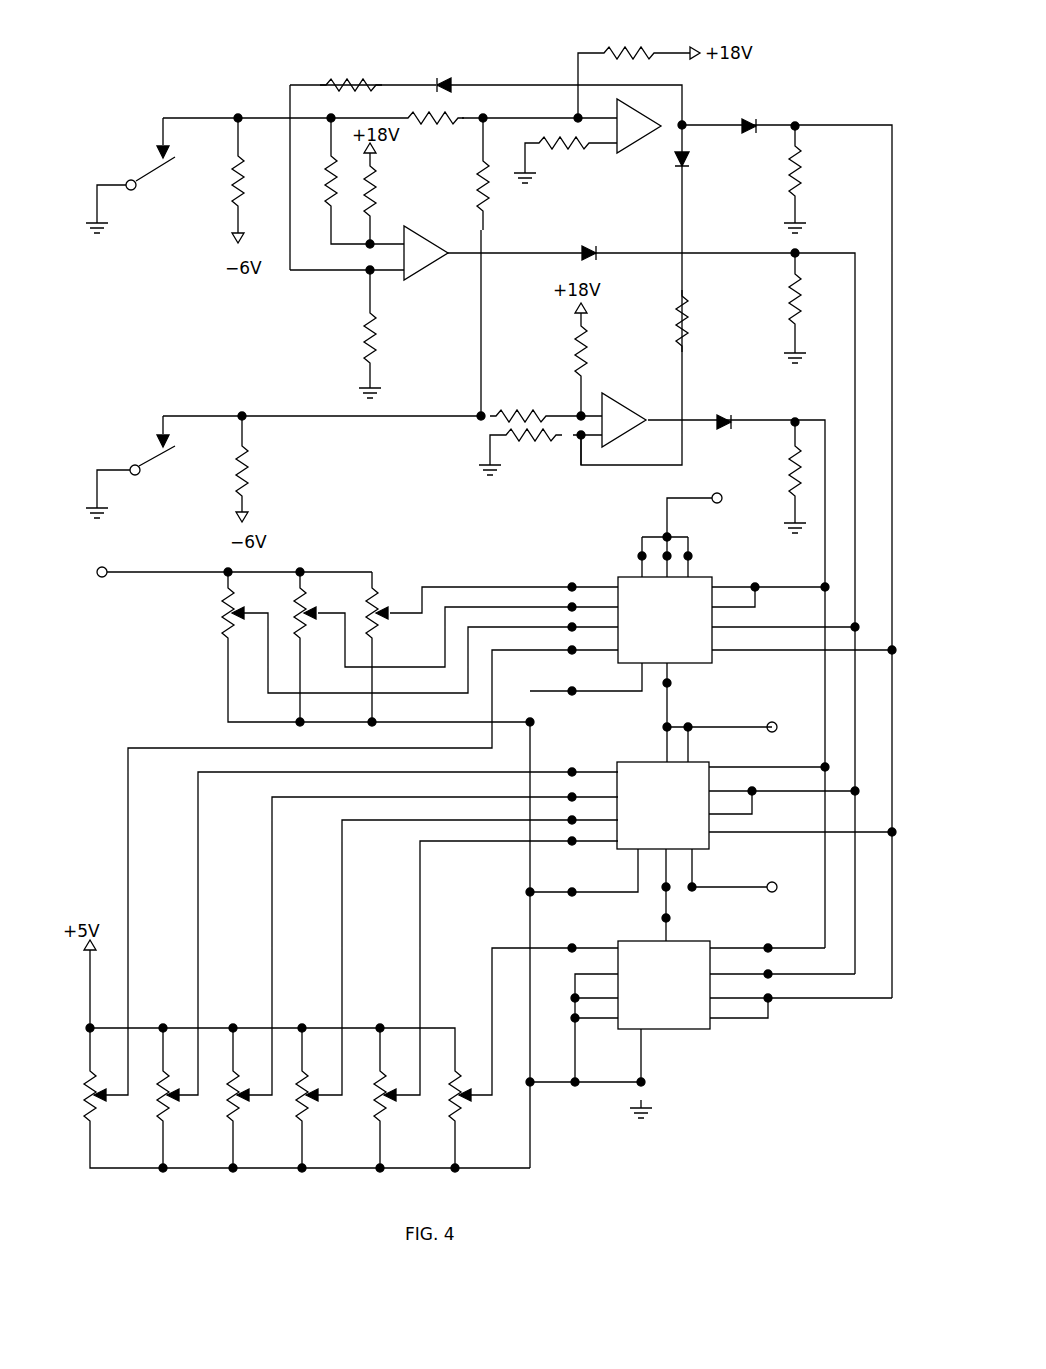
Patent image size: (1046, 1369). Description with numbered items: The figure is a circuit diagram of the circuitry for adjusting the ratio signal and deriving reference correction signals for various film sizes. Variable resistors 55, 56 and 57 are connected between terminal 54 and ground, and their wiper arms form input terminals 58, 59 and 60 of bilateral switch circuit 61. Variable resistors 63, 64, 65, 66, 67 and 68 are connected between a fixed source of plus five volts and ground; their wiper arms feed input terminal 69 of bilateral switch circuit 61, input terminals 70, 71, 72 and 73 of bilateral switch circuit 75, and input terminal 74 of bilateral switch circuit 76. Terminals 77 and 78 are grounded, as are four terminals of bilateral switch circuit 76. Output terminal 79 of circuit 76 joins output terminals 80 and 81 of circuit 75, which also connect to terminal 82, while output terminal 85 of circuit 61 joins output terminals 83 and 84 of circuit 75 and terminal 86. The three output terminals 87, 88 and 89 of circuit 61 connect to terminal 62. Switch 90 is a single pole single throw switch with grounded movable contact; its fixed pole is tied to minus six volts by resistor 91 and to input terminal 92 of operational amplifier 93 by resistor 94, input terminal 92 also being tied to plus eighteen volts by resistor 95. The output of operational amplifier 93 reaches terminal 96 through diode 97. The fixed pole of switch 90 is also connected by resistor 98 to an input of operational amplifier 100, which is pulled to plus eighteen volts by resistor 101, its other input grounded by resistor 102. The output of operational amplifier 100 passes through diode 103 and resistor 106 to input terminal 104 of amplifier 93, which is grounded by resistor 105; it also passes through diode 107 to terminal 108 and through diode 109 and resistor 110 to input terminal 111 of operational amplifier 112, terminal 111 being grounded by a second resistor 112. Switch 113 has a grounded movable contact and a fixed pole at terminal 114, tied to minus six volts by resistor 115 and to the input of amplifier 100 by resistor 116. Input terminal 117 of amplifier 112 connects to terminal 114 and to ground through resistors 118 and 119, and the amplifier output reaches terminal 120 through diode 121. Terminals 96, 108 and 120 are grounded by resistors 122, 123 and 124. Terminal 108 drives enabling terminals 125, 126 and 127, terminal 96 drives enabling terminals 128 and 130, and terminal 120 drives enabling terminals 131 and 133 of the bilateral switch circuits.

The terminal 54 is at (106, 568).
The variable resistor 55 is at (223, 620).
The variable resistor 56 is at (291, 594).
The variable resistor 57 is at (363, 594).
The input terminal 58 is at (568, 626).
The input terminal 59 is at (568, 606).
The input terminal 60 is at (572, 584).
The bilateral switch circuit 61 is at (706, 580).
The terminal 62 is at (722, 503).
The variable resistor 63 is at (80, 1092).
The variable resistor 64 is at (156, 1126).
The variable resistor 65 is at (226, 1126).
The variable resistor 66 is at (297, 1126).
The variable resistor 67 is at (375, 1126).
The variable resistor 68 is at (450, 1126).
The input terminal 69 is at (572, 654).
The input terminal 70 is at (573, 772).
The input terminal 71 is at (572, 796).
The input terminal 72 is at (572, 820).
The input terminal 73 is at (570, 842).
The input terminal 74 is at (572, 948).
The bilateral switch circuit 75 is at (700, 762).
The bilateral switch circuit 76 is at (680, 1030).
The terminal 77 is at (572, 692).
The terminal 78 is at (572, 892).
The output terminal 79 is at (666, 918).
The output terminal 80 is at (666, 887).
The output terminal 81 is at (692, 887).
The terminal 82 is at (772, 887).
The output terminal 83 is at (666, 727).
The output terminal 84 is at (688, 726).
The output terminal 85 is at (668, 684).
The terminal 86 is at (788, 712).
The output terminal 87 is at (640, 556).
The output terminal 88 is at (665, 558).
The output terminal 89 is at (690, 556).
The switch 90 is at (158, 160).
The resistor 91 is at (234, 184).
The input terminal 92 is at (364, 248).
The operational amplifier 93 is at (420, 243).
The resistor 94 is at (332, 181).
The resistor 95 is at (384, 193).
The terminal 96 is at (803, 250).
The diode 97 is at (588, 242).
The resistor 98 is at (455, 120).
The operational amplifier 100 is at (620, 142).
The resistor 101 is at (630, 55).
The resistor 102 is at (582, 145).
The diode 103 is at (446, 83).
The input terminal 104 is at (368, 274).
The resistor 105 is at (366, 341).
The resistor 106 is at (372, 80).
The diode 107 is at (748, 124).
The terminal 108 is at (795, 126).
The diode 109 is at (689, 160).
The resistor 110 is at (678, 323).
The input terminal 111 is at (594, 443).
The operational amplifier 112 is at (612, 397).
The switch 113 is at (164, 456).
The terminal 114 is at (478, 414).
The resistor 115 is at (234, 474).
The resistor 116 is at (476, 198).
The input terminal 117 is at (576, 408).
The resistor 118 is at (529, 412).
The resistor 119 is at (574, 338).
The terminal 120 is at (805, 404).
The diode 121 is at (718, 416).
The resistor 122 is at (793, 305).
The resistor 123 is at (800, 166).
The resistor 124 is at (790, 476).
The enabling terminal 125 is at (892, 650).
The enabling terminal 126 is at (892, 832).
The enabling terminal 127 is at (768, 998).
The enabling terminal 128 is at (856, 627).
The enabling terminal 130 is at (768, 974).
The enabling terminal 131 is at (824, 586).
The enabling terminal 133 is at (768, 948).